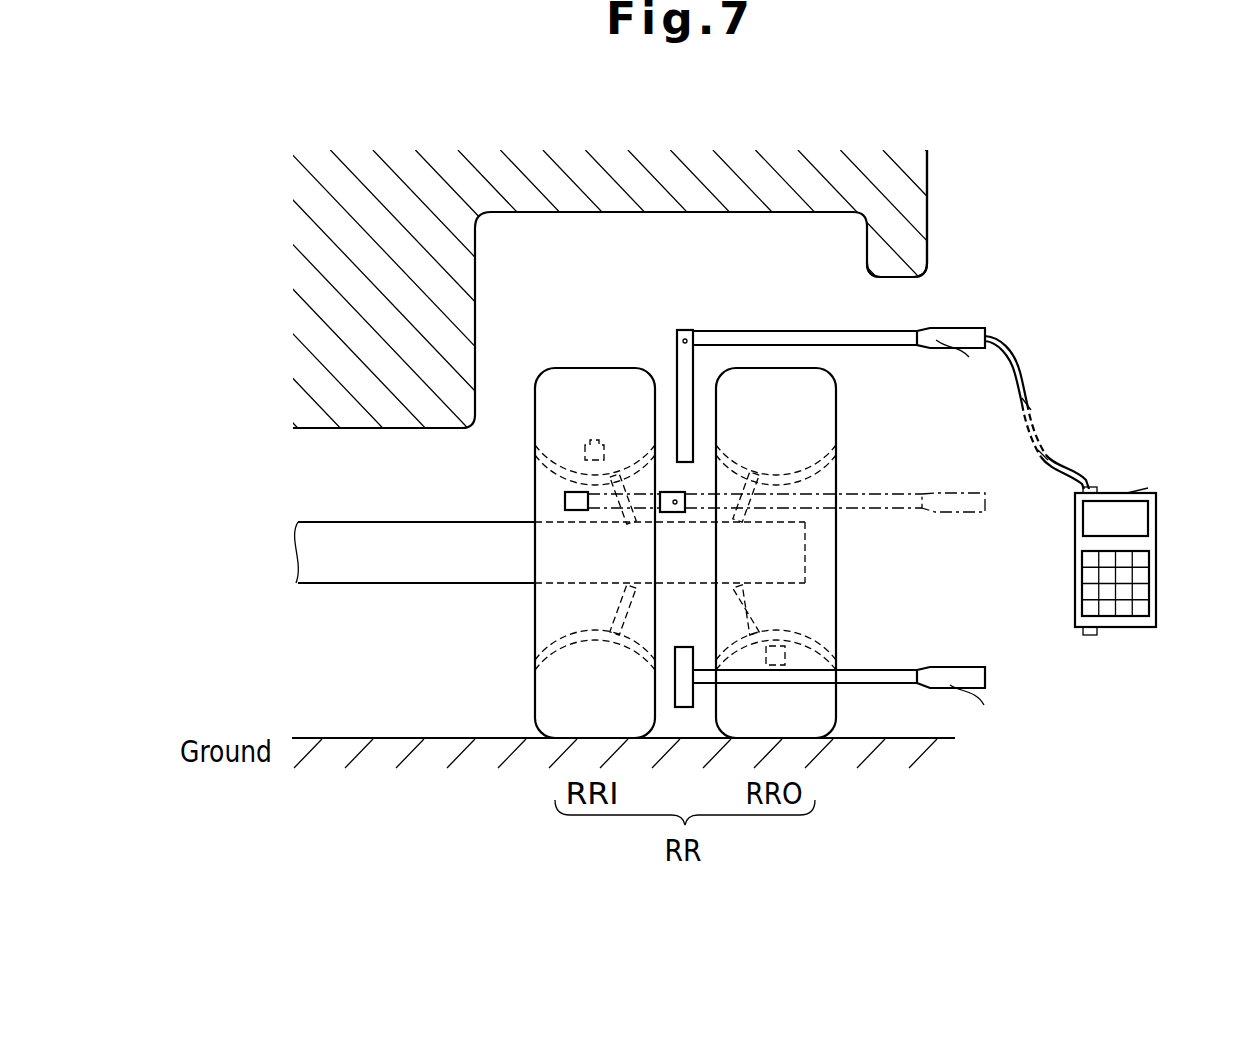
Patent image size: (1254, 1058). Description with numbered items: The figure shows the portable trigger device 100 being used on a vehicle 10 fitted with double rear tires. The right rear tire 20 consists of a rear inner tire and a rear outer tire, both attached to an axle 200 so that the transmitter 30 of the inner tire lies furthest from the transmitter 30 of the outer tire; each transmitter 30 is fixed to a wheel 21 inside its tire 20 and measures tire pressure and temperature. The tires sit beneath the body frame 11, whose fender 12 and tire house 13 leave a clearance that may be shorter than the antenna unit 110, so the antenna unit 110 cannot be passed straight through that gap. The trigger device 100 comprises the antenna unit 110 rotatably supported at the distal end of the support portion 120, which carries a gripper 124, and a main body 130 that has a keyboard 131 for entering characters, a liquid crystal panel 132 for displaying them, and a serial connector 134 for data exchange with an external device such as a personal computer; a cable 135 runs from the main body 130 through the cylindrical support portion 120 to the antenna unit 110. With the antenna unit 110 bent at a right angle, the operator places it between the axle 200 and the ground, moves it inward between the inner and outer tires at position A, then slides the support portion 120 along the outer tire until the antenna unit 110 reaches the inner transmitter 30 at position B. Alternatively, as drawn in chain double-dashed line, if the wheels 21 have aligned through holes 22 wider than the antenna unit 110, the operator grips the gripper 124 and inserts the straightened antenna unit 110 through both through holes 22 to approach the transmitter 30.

The vehicle 10 is at (1026, 146).
The body frame 11 is at (927, 190).
The fender 12 is at (912, 276).
The tire house 13 is at (642, 213).
The tire 20 is at (542, 398).
The wheel 21 is at (535, 462).
The through hole 22 is at (608, 482).
The transmitter 30 is at (596, 441).
The trigger device 100 is at (1144, 343).
The antenna unit 110 is at (677, 362).
The support portion 120 is at (800, 330).
The gripper 124 is at (950, 331).
The main body 130 is at (1153, 542).
The keyboard 131 is at (1150, 608).
The liquid crystal panel 132 is at (1142, 520).
The RS-232C connector 134 is at (1090, 637).
The cable 135 is at (1027, 369).
The axle 200 is at (377, 585).